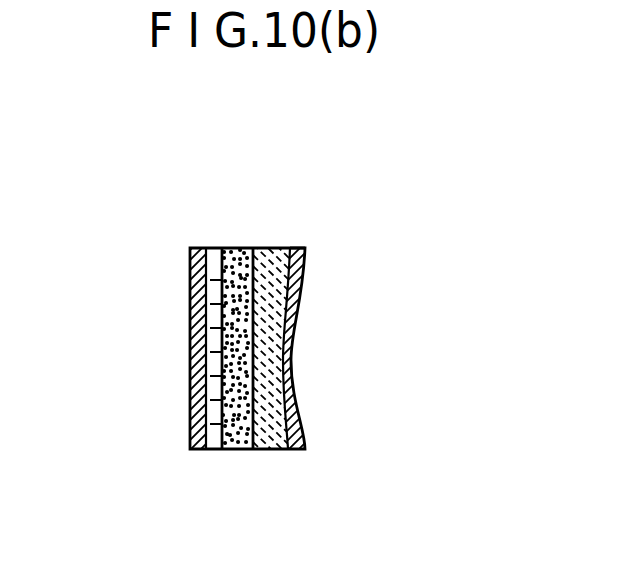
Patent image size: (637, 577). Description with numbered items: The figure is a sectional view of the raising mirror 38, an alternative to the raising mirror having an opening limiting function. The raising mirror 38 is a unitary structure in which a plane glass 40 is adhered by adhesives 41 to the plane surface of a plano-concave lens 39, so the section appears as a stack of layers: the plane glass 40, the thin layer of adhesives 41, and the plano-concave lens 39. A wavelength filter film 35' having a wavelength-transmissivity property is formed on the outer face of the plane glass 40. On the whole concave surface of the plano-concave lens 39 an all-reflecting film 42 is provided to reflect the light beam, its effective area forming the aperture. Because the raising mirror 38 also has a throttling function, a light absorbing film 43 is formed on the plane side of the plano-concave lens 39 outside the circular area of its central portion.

The raising mirror 38 is at (188, 247).
The wavelength filter film 35' is at (148, 378).
The adhesives 41 is at (217, 450).
The plane glass 40 is at (216, 300).
The light absorbing film 43 is at (256, 450).
The all-reflecting film 42 is at (292, 377).
The plano-concave lens 39 is at (288, 248).